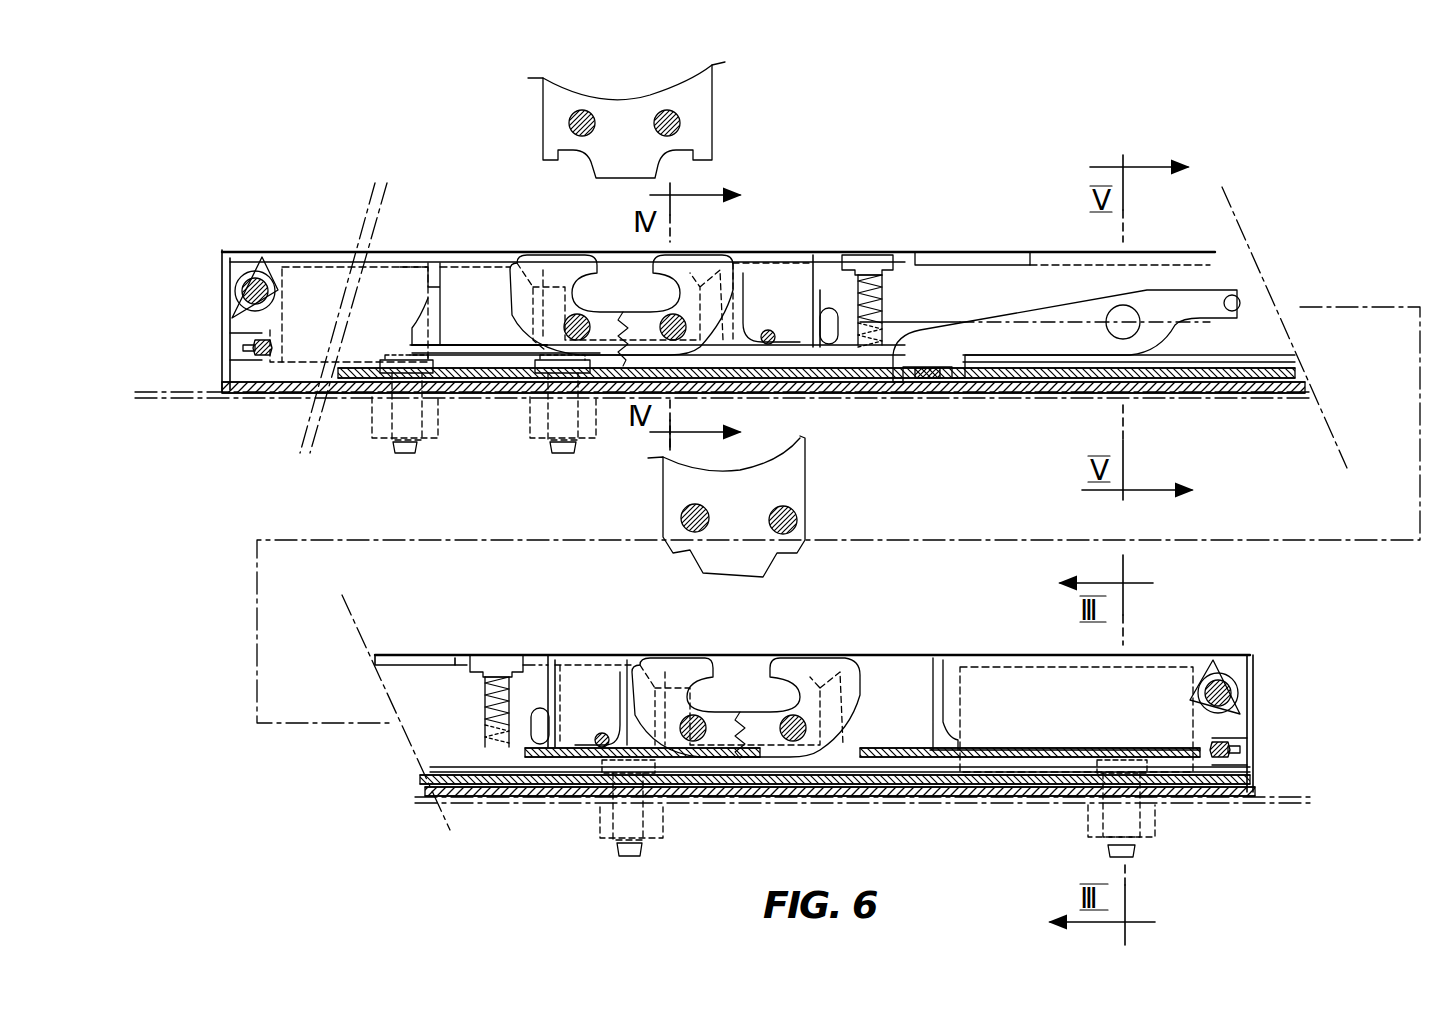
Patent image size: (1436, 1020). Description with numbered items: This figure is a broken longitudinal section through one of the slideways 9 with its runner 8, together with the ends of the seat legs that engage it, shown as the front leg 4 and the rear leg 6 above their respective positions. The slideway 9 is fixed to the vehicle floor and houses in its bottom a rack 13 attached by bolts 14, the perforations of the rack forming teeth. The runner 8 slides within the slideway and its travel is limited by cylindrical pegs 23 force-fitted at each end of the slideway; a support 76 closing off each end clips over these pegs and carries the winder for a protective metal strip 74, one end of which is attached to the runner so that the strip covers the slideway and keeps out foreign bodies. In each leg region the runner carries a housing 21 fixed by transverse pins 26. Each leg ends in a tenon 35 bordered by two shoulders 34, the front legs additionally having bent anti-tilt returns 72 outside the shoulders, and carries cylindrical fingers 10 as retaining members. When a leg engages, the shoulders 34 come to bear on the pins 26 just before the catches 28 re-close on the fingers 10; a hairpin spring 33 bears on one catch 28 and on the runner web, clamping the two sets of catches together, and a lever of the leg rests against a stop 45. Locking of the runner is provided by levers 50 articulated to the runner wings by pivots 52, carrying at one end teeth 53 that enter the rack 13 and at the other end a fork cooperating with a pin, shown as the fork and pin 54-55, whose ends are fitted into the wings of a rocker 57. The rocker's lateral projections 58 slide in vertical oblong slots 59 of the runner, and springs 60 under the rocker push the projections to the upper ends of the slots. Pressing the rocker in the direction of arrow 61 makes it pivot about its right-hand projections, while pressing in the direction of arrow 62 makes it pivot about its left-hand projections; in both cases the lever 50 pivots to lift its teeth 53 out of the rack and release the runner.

The front leg 4 is at (700, 102).
The rear leg 6 is at (782, 484).
The runner 8 is at (913, 757).
The slideway 9 is at (1010, 795).
The cylindrical finger 10 is at (682, 127).
The rack 13 is at (997, 772).
The bolt 14 is at (1153, 817).
The housing 21 is at (460, 253).
The cylindrical peg 23 is at (262, 360).
The transverse pin 26 is at (693, 740).
The catch 28 is at (552, 290).
The hairpin spring 33 is at (770, 330).
The shoulder 34 is at (560, 158).
The tenon 35 is at (625, 172).
The stop 45 is at (1210, 680).
The lever 50 is at (1073, 333).
The pivot 52 is at (1107, 316).
The tooth 53 is at (903, 382).
The fork and pin 54-55 is at (1240, 306).
The rocker 57 is at (955, 256).
The lateral projection 58 is at (832, 308).
The oblong slot 59 is at (836, 345).
The spring 60 is at (872, 345).
The arrow 61 is at (933, 232).
The arrow 62 is at (483, 630).
The bent anti-tilt return 72 is at (712, 163).
The protective metal strip 74 is at (407, 253).
The support 76 is at (222, 280).